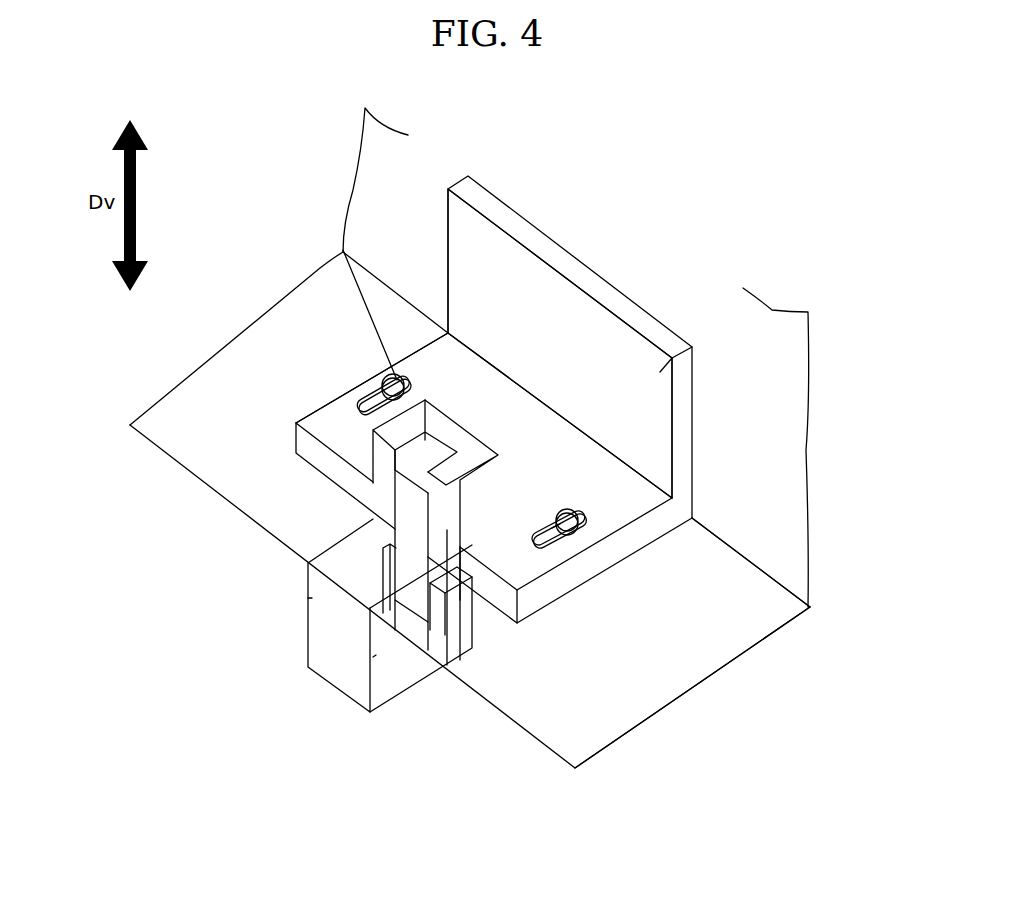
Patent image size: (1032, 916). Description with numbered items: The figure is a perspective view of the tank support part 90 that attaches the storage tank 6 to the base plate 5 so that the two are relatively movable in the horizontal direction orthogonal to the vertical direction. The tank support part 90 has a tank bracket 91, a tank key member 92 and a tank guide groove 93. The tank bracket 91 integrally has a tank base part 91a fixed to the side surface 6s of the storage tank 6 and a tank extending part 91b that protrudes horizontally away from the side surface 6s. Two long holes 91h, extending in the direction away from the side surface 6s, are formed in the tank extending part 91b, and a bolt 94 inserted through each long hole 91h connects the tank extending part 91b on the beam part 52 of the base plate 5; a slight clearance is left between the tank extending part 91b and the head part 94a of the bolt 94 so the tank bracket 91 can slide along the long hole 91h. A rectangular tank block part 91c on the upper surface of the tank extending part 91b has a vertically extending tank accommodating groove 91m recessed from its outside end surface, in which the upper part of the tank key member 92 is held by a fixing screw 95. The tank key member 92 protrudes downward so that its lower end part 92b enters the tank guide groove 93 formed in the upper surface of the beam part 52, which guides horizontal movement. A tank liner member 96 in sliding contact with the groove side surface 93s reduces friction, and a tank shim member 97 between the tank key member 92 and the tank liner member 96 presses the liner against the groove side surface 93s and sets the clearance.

The base plate 5 is at (162, 408).
The beam part 52 is at (767, 630).
The storage tank 6 is at (364, 198).
The side surface 6s is at (782, 393).
The tank support part 90 is at (314, 400).
The tank bracket 91 is at (690, 492).
The tank base part 91a is at (665, 325).
The tank extending part 91b is at (628, 545).
The tank block part 91c is at (452, 446).
The long hole 91h is at (395, 380).
The tank accommodating groove 91m is at (557, 517).
The tank key member 92 is at (322, 533).
The lower end part 92b is at (407, 632).
The tank guide groove 93 is at (308, 645).
The groove side surface 93s is at (308, 598).
The bolt 94 is at (383, 383).
The head part 94a is at (660, 372).
The fixing screw 95 is at (455, 620).
The tank liner member 96 is at (383, 552).
The tank shim member 97 is at (367, 652).